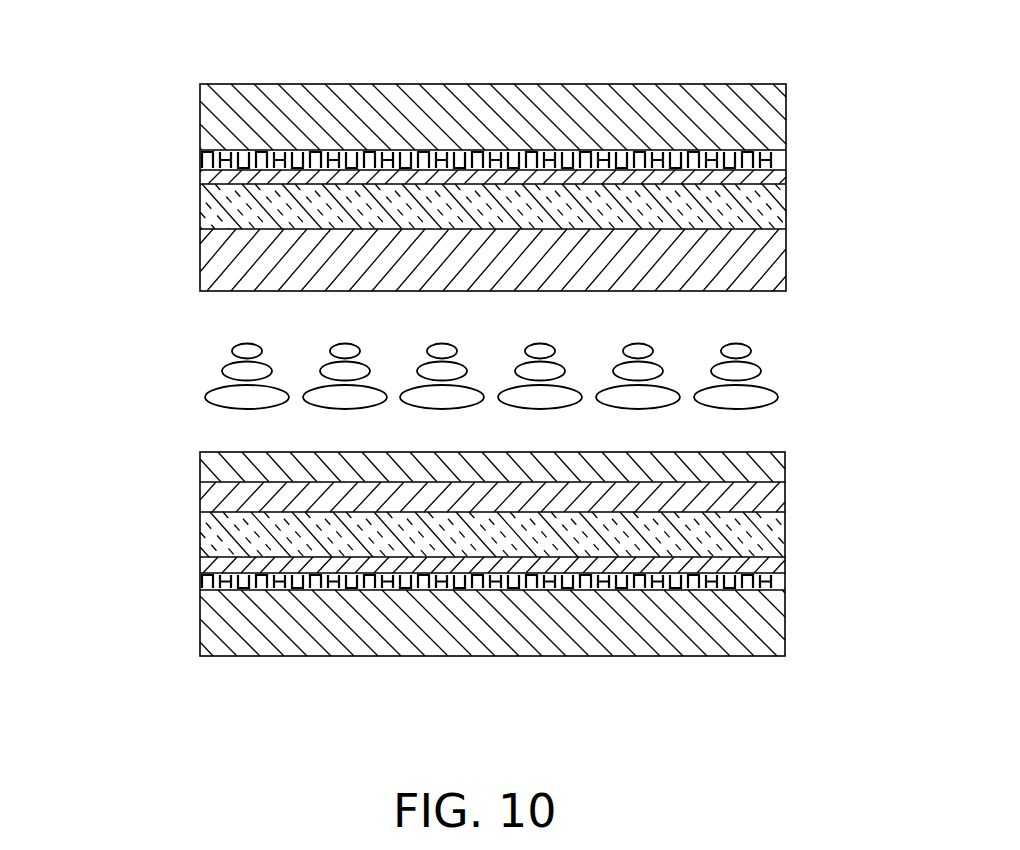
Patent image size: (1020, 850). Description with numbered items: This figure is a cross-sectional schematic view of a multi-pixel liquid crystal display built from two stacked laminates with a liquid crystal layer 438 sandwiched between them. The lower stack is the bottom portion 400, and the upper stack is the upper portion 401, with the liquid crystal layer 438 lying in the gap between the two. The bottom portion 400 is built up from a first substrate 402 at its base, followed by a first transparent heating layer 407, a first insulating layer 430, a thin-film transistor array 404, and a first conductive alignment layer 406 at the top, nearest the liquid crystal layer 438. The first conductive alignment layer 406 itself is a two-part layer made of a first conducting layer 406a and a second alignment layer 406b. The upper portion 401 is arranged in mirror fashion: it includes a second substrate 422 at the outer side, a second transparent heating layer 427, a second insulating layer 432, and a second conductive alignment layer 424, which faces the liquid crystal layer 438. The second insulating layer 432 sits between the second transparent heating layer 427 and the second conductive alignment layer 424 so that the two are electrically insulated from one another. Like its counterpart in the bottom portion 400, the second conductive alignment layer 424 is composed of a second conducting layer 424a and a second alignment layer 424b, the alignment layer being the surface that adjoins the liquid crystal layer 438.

The bottom portion 400 is at (797, 428).
The upper portion 401 is at (789, 60).
The first substrate 402 is at (200, 623).
The thin-film transistor array 404 is at (200, 527).
The first conductive alignment layer 406 is at (86, 427).
The first conducting layer 406a is at (200, 457).
The second alignment layer 406b is at (200, 488).
The first transparent heating layer 407 is at (200, 577).
The second substrate 422 is at (200, 117).
The second conductive alignment layer 424 is at (86, 183).
The second conducting layer 424a is at (200, 208).
The second alignment layer 424b is at (200, 260).
The second transparent heating layer 427 is at (200, 158).
The first insulating layer 430 is at (200, 552).
The second insulating layer 432 is at (200, 177).
The liquid crystal layer 438 is at (208, 396).